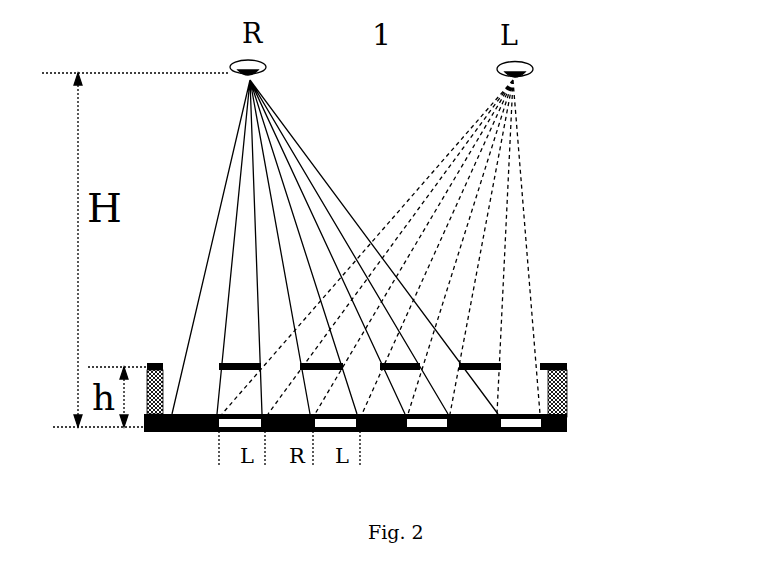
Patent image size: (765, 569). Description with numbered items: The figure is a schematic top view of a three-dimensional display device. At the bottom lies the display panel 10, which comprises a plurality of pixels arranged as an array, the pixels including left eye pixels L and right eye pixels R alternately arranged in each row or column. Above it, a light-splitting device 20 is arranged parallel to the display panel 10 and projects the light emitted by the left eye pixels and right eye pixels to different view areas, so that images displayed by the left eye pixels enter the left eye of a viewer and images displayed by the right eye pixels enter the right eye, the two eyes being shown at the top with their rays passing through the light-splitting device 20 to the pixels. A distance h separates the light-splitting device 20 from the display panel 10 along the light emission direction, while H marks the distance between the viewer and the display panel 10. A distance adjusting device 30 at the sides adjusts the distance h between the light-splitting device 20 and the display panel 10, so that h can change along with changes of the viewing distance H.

The display panel 10 is at (568, 432).
The light-splitting device 20 is at (562, 363).
The distance adjusting device 30 is at (567, 390).